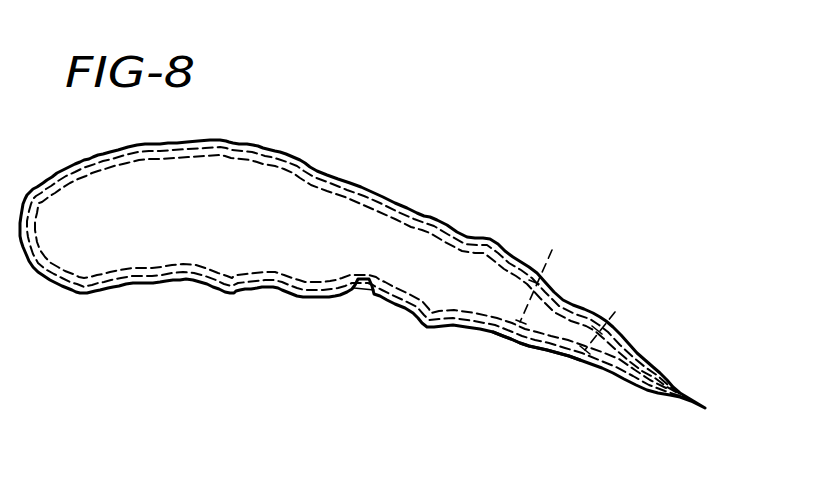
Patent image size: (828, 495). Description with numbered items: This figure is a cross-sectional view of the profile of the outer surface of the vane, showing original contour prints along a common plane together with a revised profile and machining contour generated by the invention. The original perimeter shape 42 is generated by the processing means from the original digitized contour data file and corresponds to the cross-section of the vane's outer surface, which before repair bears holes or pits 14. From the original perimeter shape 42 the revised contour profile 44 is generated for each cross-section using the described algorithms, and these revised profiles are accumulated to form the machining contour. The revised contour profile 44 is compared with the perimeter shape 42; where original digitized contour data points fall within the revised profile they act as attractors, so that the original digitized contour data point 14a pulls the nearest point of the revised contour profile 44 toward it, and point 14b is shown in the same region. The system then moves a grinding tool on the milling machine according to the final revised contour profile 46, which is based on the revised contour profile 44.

The holes or pits 14 is at (366, 278).
The original digitized contour data point 14a is at (365, 273).
The second airfoil surface 14b is at (357, 295).
The original perimeter shape 42 is at (513, 340).
The revised contour profile 44 is at (615, 312).
The final revised contour profile 46 is at (552, 250).